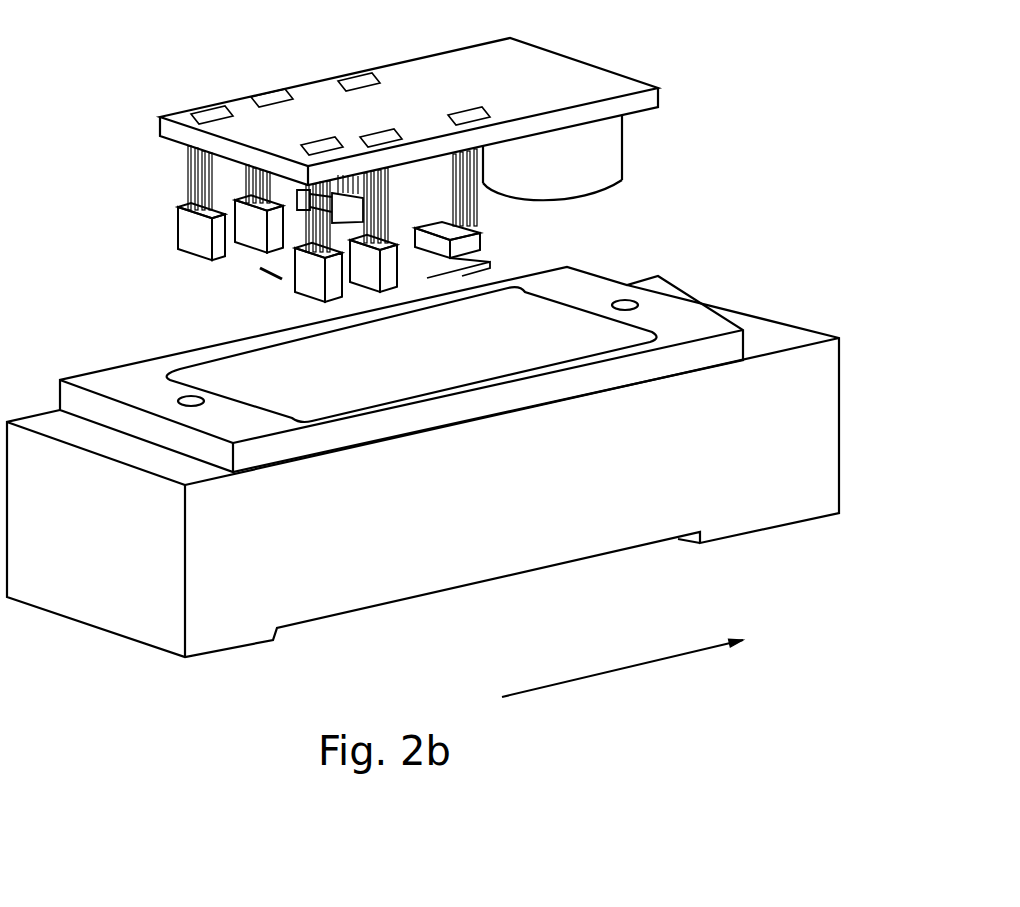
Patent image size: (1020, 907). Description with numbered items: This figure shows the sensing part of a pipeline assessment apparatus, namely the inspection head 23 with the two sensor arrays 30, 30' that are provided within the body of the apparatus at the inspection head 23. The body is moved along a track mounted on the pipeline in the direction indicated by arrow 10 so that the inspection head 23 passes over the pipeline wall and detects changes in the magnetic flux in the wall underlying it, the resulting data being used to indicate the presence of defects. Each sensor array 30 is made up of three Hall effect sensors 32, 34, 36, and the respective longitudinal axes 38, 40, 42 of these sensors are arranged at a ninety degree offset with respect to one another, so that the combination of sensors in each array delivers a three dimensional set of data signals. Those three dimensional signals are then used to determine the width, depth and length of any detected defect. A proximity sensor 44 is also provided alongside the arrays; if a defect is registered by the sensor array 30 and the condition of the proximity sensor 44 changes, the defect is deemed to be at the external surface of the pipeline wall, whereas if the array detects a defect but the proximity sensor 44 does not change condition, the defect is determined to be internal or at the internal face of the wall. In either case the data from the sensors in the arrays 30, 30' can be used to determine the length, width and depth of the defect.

The arrow 10 is at (622, 668).
The inspection head 23 is at (828, 446).
The sensor array 30 is at (205, 233).
The sensor array 30' is at (501, 374).
The Hall sensor 32 is at (196, 237).
The Hall sensor 34 is at (250, 200).
The Hall sensor 36 is at (297, 202).
The longitudinal axis 38 is at (266, 280).
The longitudinal axis 40 is at (357, 258).
The longitudinal axis 42 is at (477, 235).
The proximity sensor 44 is at (630, 152).